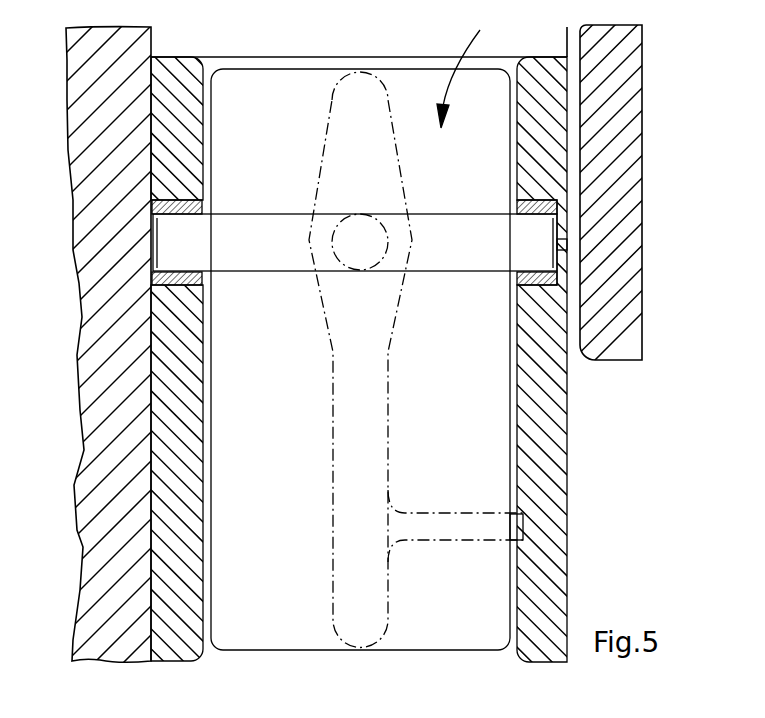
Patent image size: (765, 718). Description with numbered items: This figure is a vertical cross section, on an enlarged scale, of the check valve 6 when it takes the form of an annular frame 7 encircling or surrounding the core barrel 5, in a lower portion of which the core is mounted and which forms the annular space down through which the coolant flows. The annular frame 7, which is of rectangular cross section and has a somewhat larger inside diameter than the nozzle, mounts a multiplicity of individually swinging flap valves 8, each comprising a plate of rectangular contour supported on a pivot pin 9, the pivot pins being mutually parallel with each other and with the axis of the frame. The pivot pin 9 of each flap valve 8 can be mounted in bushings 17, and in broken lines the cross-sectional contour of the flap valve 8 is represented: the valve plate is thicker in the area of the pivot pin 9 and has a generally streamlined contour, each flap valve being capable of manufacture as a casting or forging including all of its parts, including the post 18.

The core barrel 5 is at (100, 539).
The check valve 6 is at (553, 592).
The annular frame 7 is at (195, 131).
The flap valve 8 is at (490, 565).
The pivot pin 9 is at (438, 228).
The bushing 17 is at (200, 278).
The post 18 is at (452, 513).